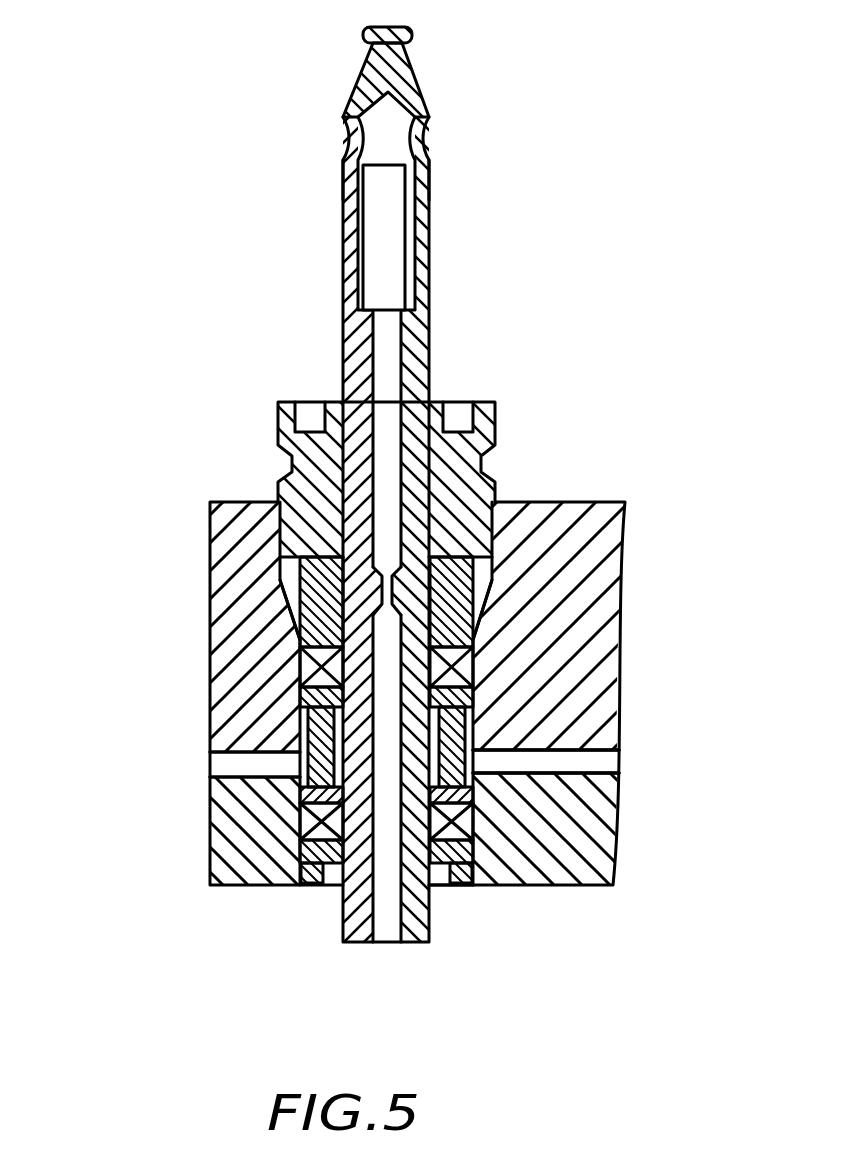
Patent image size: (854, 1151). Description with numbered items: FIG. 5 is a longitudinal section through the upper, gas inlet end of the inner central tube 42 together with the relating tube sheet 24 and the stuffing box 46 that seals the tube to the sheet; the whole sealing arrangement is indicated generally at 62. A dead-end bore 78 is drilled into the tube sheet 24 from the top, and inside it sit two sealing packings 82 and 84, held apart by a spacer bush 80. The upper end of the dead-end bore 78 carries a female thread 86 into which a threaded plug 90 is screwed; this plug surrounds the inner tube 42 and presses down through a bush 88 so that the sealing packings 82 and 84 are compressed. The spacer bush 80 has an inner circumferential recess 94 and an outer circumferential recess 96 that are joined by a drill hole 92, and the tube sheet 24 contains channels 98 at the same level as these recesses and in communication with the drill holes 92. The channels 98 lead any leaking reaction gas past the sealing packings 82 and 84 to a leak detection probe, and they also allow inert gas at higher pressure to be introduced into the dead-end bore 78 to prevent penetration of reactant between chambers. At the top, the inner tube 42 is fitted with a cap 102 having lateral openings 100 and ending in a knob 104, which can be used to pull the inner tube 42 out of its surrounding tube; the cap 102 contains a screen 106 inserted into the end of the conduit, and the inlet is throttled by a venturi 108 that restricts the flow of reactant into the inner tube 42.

The tube sheet 24 is at (524, 503).
The inner central tube 42 is at (431, 377).
The stuffing box 46 is at (296, 632).
The seal assembly 62 is at (122, 587).
The dead-end bore 78 is at (470, 888).
The spacer bush 80 is at (318, 742).
The sealing packing 82 is at (300, 657).
The sealing packing 84 is at (308, 852).
The female thread 86 is at (288, 598).
The bush 88 is at (303, 708).
The threaded plug 90 is at (497, 443).
The drill hole 92 is at (594, 758).
The inner circumferential recess 94 is at (474, 750).
The outer circumferential recess 96 is at (470, 798).
The channels 98 is at (220, 764).
The lateral openings 100 is at (345, 142).
The cap 102 is at (432, 197).
The knob 104 is at (405, 36).
The screen 106 is at (357, 232).
The venturi 108 is at (431, 568).